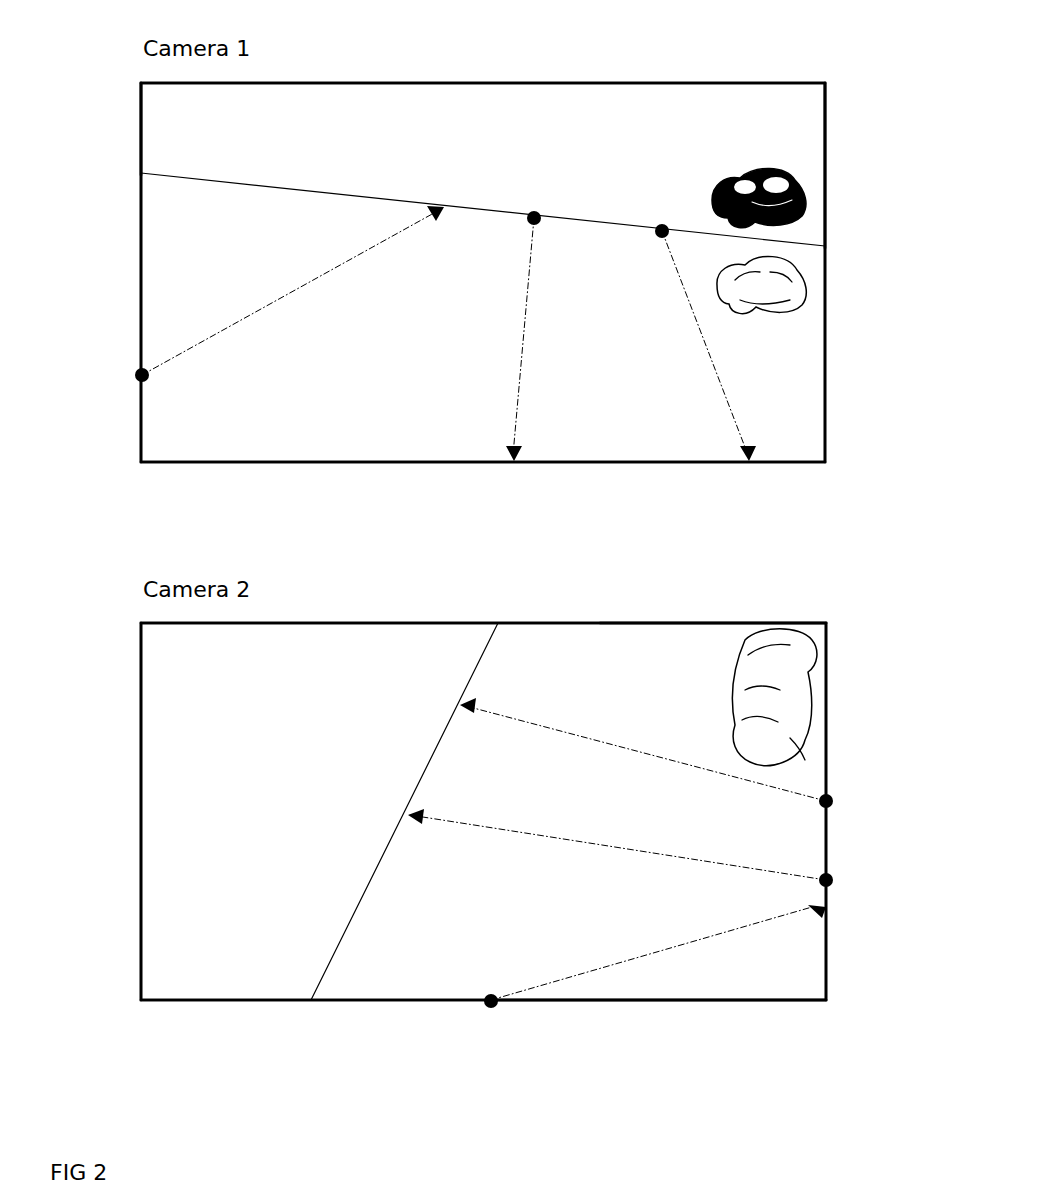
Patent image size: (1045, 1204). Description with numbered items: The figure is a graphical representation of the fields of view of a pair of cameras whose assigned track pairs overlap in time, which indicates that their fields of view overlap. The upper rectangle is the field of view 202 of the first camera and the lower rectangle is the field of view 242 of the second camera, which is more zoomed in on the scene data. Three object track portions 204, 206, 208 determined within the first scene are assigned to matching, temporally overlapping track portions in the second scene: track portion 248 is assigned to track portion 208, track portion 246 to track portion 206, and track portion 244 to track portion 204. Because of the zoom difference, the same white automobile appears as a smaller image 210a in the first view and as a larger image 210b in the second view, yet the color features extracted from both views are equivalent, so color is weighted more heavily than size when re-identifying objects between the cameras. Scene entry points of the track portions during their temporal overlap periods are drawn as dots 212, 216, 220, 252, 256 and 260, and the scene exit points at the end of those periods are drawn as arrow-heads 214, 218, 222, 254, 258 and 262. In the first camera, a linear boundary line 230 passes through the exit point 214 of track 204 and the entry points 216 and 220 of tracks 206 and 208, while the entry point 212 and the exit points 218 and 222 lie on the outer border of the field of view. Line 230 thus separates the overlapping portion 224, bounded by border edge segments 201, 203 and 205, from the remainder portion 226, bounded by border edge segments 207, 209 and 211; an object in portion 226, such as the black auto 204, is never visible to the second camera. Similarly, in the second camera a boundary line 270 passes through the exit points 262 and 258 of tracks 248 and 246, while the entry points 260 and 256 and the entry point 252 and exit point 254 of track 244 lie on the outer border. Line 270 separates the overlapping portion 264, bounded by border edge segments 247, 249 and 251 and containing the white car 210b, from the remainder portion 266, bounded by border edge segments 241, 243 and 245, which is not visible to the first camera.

The outer field-of-view border edge segment 201 is at (141, 311).
The field of view of the first camera 202 is at (343, 463).
The outer field-of-view border edge segment 203 is at (232, 463).
The object track portion 204 is at (335, 268).
The outer field-of-view border edge segment 205 is at (825, 375).
The object track portion 206 is at (523, 325).
The outer field-of-view border edge segment 207 is at (141, 138).
The object track portion 208 is at (683, 283).
The outer field-of-view border edge segment 209 is at (450, 82).
The appearance of the white vehicle object in the first camera view 210a is at (800, 297).
The outer field-of-view border edge segment 211 is at (825, 100).
The entry point 212 is at (149, 382).
The exit point 214 is at (432, 204).
The entry point 216 is at (533, 211).
The exit point 218 is at (504, 452).
The entry point 220 is at (660, 225).
The exit point 222 is at (739, 452).
The overlapping portion of the first camera field of view 224 is at (192, 248).
The remainder portion of the first camera field of view 226 is at (616, 116).
The overlapping portion boundary line 230 is at (262, 192).
The outer field-of-view border edge segment 241 is at (141, 896).
The field of view of the second camera 242 is at (340, 1004).
The outer field-of-view border edge segment 243 is at (322, 624).
The track portion 244 is at (580, 978).
The outer field-of-view border edge segment 245 is at (248, 1001).
The track portion 246 is at (600, 845).
The outer field-of-view border edge segment 247 is at (735, 624).
The track portion 248 is at (595, 740).
The outer field-of-view border edge segment 249 is at (826, 969).
The outer field-of-view border edge segment 251 is at (665, 1001).
The entry point 252 is at (487, 1007).
The exit point 254 is at (815, 912).
The entry point 256 is at (832, 886).
The exit point 258 is at (419, 824).
The entry point 260 is at (830, 806).
The exit point 262 is at (478, 700).
The overlapping portion of the second camera field of view 264 is at (612, 666).
The remainder portion of the second camera field of view 266 is at (183, 820).
The overlapping portion boundary line 270 is at (497, 630).
The appearance of the white vehicle object in the second camera view 210b is at (800, 698).